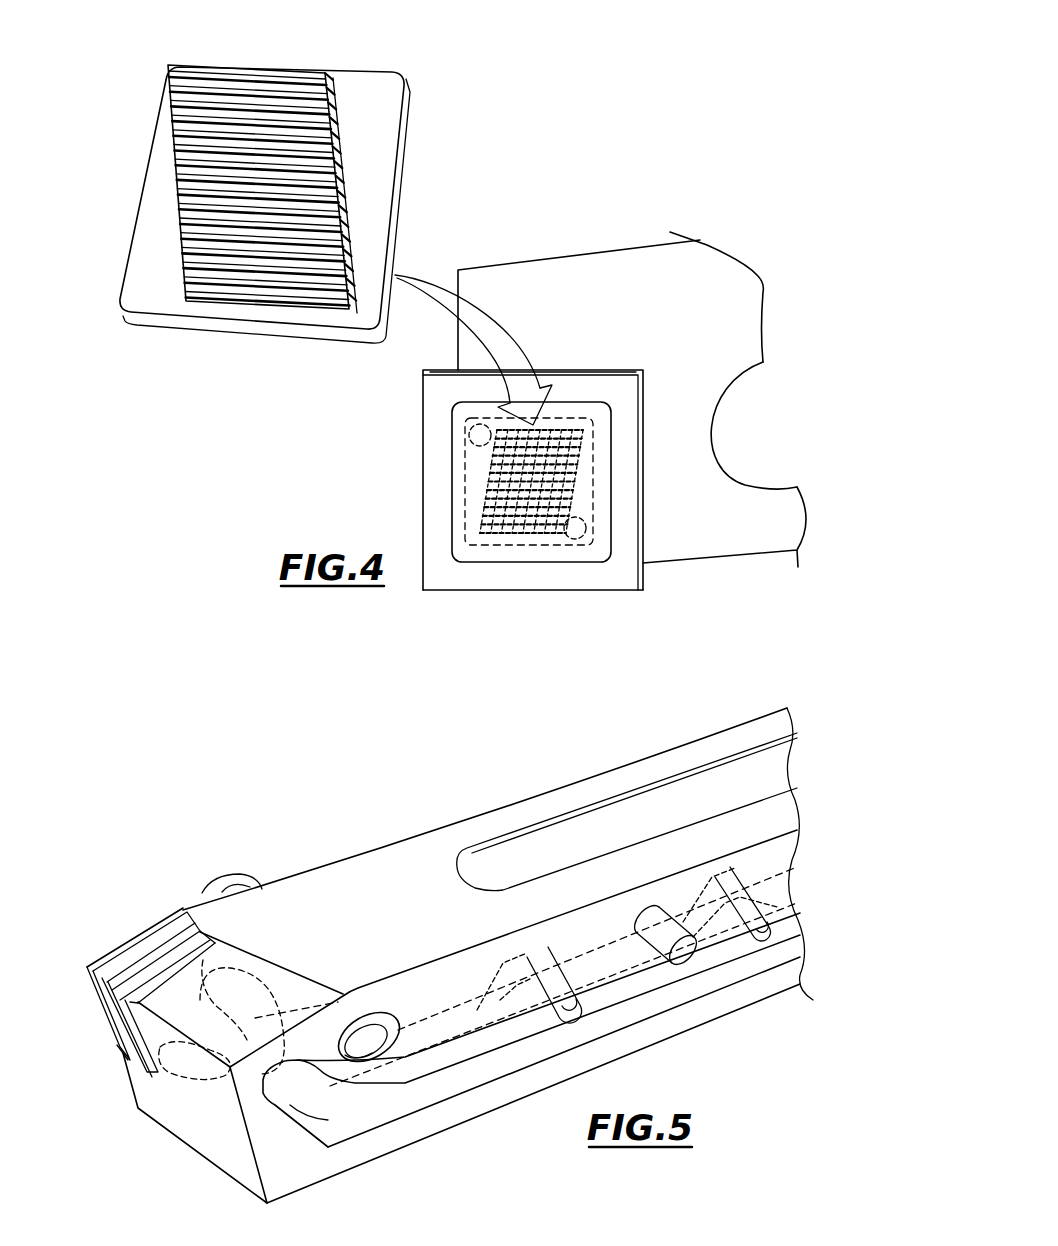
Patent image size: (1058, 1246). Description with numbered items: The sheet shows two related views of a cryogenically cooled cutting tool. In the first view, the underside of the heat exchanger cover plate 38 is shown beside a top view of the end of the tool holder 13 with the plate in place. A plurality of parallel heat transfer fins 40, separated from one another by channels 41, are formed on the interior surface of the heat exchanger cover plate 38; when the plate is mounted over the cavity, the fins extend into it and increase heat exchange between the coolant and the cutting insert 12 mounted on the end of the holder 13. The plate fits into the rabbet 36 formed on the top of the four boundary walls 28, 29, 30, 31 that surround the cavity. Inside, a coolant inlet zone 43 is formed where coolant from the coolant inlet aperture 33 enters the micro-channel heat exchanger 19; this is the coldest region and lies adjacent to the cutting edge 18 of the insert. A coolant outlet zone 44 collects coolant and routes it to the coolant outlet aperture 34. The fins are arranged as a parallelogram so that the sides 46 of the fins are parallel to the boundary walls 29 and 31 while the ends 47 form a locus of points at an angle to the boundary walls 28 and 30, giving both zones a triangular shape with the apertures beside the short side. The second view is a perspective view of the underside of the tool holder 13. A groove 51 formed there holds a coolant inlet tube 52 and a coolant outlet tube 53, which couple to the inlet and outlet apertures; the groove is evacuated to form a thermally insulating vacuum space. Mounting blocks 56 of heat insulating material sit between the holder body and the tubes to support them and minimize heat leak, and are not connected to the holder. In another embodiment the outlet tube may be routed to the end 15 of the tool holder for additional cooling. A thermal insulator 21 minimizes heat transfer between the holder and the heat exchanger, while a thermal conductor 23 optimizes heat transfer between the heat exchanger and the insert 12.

In FIG. 5, the cutting insert 12 is at (128, 950).
In FIG. 5, the tool holder 13 is at (418, 948).
In FIG. 4, the end of the tool holder 15 is at (458, 355).
In FIG. 5, the end of the tool holder 15 is at (163, 1092).
In FIG. 5, the cutting edge 18 is at (108, 1027).
In FIG. 4, the micro-channel heat exchanger 19 is at (495, 590).
In FIG. 5, the micro-channel heat exchanger 19 is at (198, 947).
In FIG. 5, the thermal insulator 21 is at (203, 957).
In FIG. 5, the thermal conductor 23 is at (172, 945).
In FIG. 4, the boundary wall 28 is at (440, 487).
In FIG. 4, the boundary wall 29 is at (565, 383).
In FIG. 4, the boundary wall 30 is at (628, 450).
In FIG. 4, the boundary wall 31 is at (538, 578).
In FIG. 4, the coolant inlet aperture 33 is at (478, 432).
In FIG. 4, the coolant outlet aperture 34 is at (585, 522).
In FIG. 4, the rabbet 36 is at (603, 450).
In FIG. 4, the heat exchanger cover plate 38 is at (438, 138).
In FIG. 4, the heat transfer fins 40 is at (252, 213).
In FIG. 4, the channels 41 is at (263, 125).
In FIG. 4, the coolant inlet zone 43 is at (481, 470).
In FIG. 4, the coolant outlet zone 44 is at (582, 490).
In FIG. 4, the sides of the heat transfer fins 46 is at (298, 72).
In FIG. 4, the ends of the heat transfer fins 47 is at (343, 153).
In FIG. 5, the groove 51 is at (345, 1127).
In FIG. 5, the coolant inlet tube 52 is at (412, 1085).
In FIG. 5, the coolant outlet tube 53 is at (466, 1014).
In FIG. 5, the mounting blocks 56 is at (583, 1017).